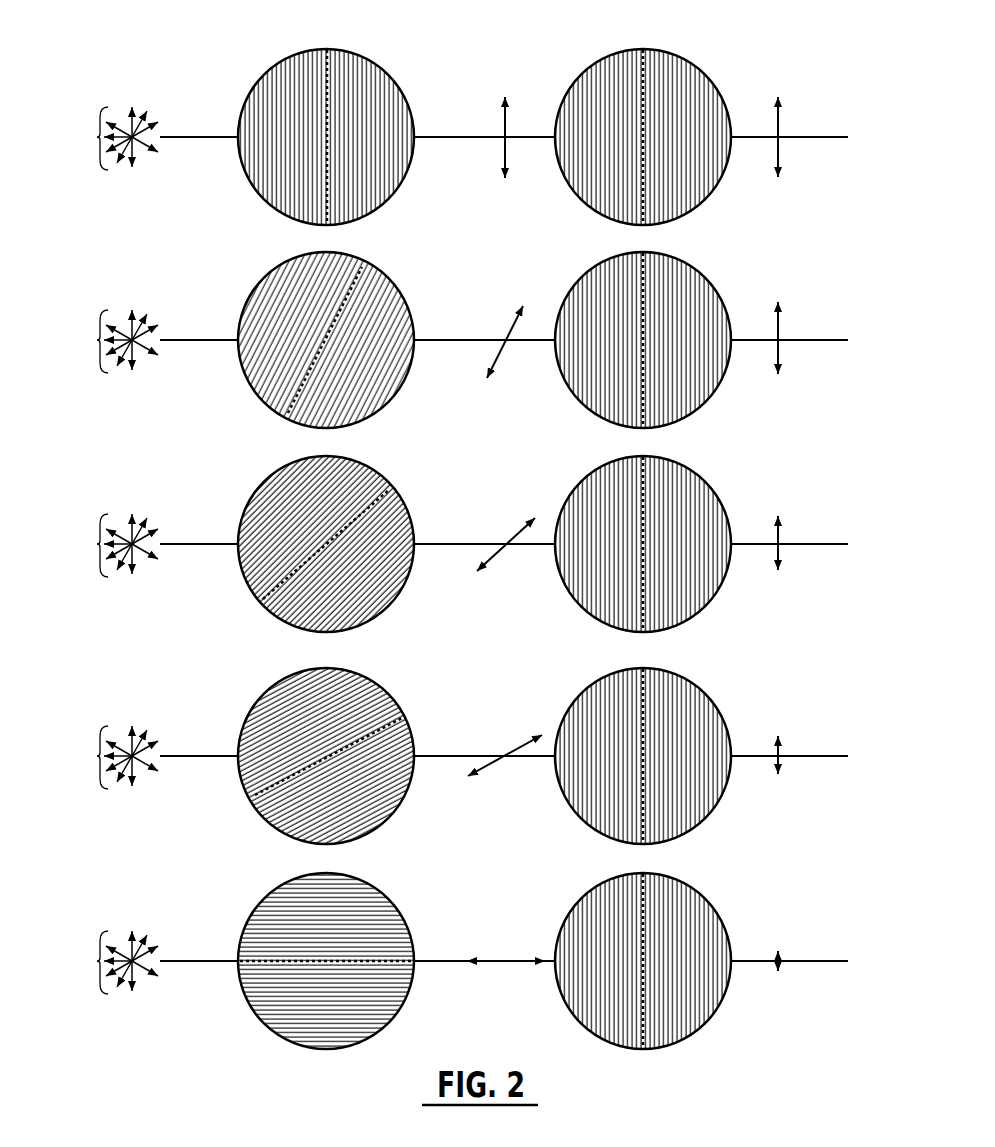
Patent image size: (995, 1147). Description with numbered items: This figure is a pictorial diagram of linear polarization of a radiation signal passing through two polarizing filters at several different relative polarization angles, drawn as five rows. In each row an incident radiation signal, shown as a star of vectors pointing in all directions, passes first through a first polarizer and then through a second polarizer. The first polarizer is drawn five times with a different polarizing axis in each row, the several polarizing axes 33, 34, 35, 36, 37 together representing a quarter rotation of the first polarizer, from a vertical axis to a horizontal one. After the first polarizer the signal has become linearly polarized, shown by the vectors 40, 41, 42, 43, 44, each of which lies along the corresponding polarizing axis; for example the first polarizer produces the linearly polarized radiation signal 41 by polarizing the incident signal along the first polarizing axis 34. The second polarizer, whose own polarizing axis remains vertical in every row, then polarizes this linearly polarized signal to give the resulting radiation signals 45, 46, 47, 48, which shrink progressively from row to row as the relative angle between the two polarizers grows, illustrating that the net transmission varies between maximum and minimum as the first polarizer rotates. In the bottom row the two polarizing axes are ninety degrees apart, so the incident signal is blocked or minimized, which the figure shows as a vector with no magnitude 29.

The vector with no magnitude 29 is at (781, 952).
The polarizing axis 33 is at (332, 70).
The first polarizing axis 34 is at (366, 274).
The polarizing axis 35 is at (376, 480).
The polarizing axis 36 is at (372, 733).
The polarizing axis 37 is at (375, 961).
The vertically polarized light 40 is at (505, 115).
The linearly polarized radiation signal 41 is at (510, 322).
The polarized light at 45 degrees 42 is at (513, 529).
The polarized light rotated further 43 is at (522, 744).
The horizontally polarized light 44 is at (508, 958).
The full intensity transmitted light 45 is at (781, 107).
The resulting radiation signal 46 is at (781, 325).
The half intensity transmitted light 47 is at (781, 530).
The strongly attenuated transmitted light 48 is at (781, 745).